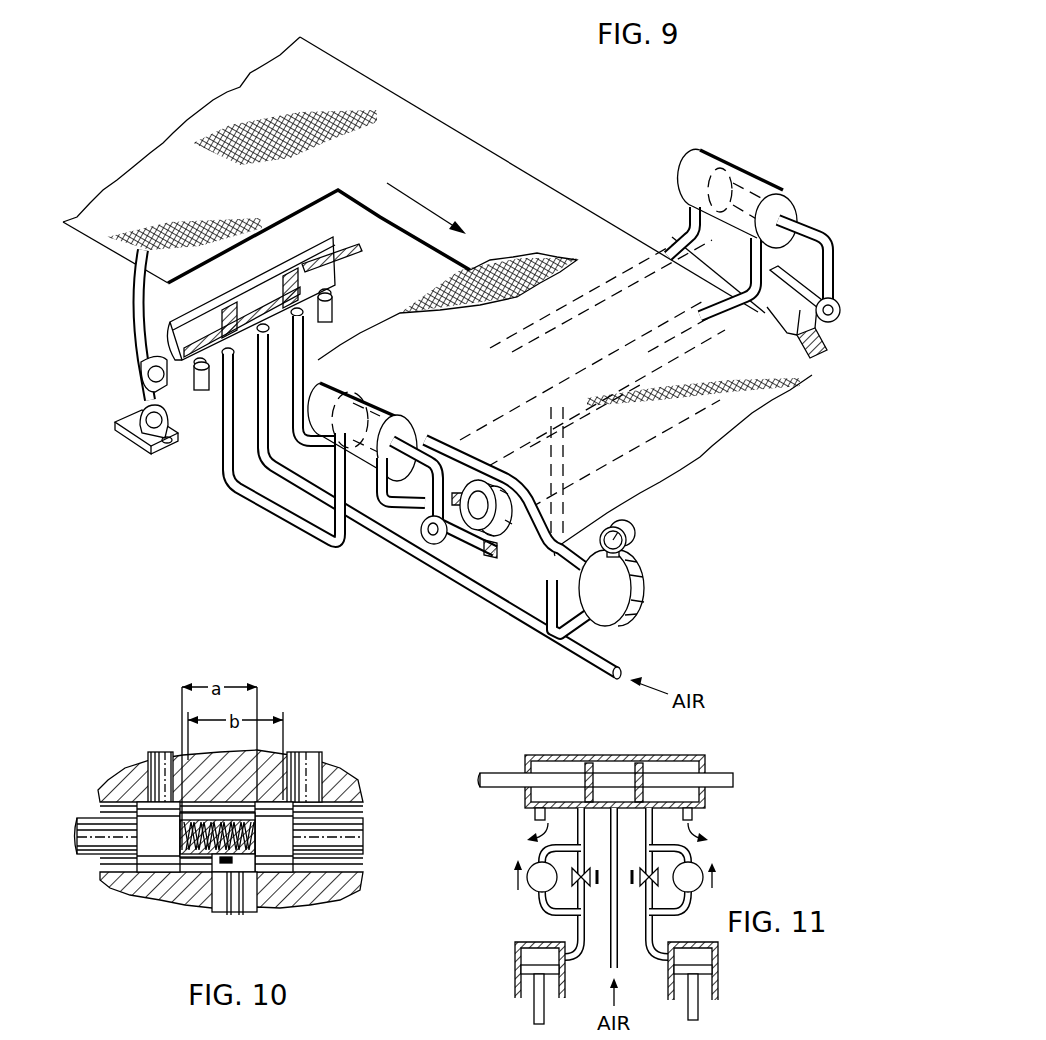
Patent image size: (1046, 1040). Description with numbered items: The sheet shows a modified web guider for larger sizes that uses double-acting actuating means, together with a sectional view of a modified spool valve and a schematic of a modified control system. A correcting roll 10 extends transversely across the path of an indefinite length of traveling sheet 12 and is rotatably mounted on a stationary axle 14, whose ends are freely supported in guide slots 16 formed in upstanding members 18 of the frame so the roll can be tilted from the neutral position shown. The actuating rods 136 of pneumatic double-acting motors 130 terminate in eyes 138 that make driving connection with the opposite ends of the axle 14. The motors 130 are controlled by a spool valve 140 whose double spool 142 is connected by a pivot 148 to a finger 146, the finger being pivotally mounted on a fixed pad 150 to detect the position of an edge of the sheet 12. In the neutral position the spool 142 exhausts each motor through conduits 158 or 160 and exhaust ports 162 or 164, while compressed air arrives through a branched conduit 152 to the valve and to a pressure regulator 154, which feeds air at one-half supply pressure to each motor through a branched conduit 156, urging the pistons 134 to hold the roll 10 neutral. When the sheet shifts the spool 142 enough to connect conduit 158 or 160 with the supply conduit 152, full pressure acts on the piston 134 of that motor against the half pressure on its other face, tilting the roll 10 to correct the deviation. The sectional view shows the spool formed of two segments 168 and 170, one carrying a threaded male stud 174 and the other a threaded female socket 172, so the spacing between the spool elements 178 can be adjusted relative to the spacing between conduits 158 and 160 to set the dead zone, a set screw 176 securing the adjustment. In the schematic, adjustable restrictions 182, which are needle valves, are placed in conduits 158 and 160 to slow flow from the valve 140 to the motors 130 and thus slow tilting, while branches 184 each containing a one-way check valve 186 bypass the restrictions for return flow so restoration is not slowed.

In FIG. 9, the correcting roll 10 is at (492, 524).
In FIG. 9, the sheet 12 is at (540, 202).
In FIG. 9, the axle 14 is at (432, 548).
In FIG. 9, the guide slots 16 is at (830, 368).
In FIG. 9, the upstanding members 18 is at (416, 506).
In FIG. 9, the pneumatic double-acting motors 130 is at (350, 394).
In FIG. 11, the pneumatic double-acting motors 130 is at (518, 985).
In FIG. 9, the pistons 134 is at (336, 386).
In FIG. 9, the actuating rods 136 is at (426, 452).
In FIG. 9, the eyes 138 is at (422, 533).
In FIG. 9, the spool valve 140 is at (248, 284).
In FIG. 10, the spool valve 140 is at (324, 893).
In FIG. 11, the spool valve 140 is at (551, 760).
In FIG. 9, the double spool 142 is at (355, 253).
In FIG. 11, the double spool 142 is at (724, 780).
In FIG. 9, the finger 146 is at (143, 315).
In FIG. 9, the pivot 148 is at (148, 376).
In FIG. 9, the fixed pad 150 is at (132, 435).
In FIG. 9, the branched conduit 152 is at (534, 628).
In FIG. 10, the branched conduit 152 is at (235, 915).
In FIG. 9, the pressure regulator 154 is at (636, 583).
In FIG. 9, the branched conduit 156 is at (745, 266).
In FIG. 9, the conduit 158 is at (222, 484).
In FIG. 10, the conduit 158 is at (164, 772).
In FIG. 11, the conduit 158 is at (571, 950).
In FIG. 9, the conduit 160 is at (297, 352).
In FIG. 10, the conduit 160 is at (305, 773).
In FIG. 11, the conduit 160 is at (654, 953).
In FIG. 9, the exhaust port 162 is at (205, 390).
In FIG. 9, the exhaust port 164 is at (333, 306).
In FIG. 10, the spool segment 168 is at (77, 840).
In FIG. 10, the spool segment 170 is at (363, 837).
In FIG. 10, the threaded female socket 172 is at (196, 866).
In FIG. 10, the threaded male stud 174 is at (230, 880).
In FIG. 10, the set screw 176 is at (217, 872).
In FIG. 10, the spool elements 178 is at (215, 837).
In FIG. 11, the adjustable restrictions 182 is at (553, 908).
In FIG. 11, the branches 184 is at (533, 856).
In FIG. 11, the one-way check valve 186 is at (527, 892).